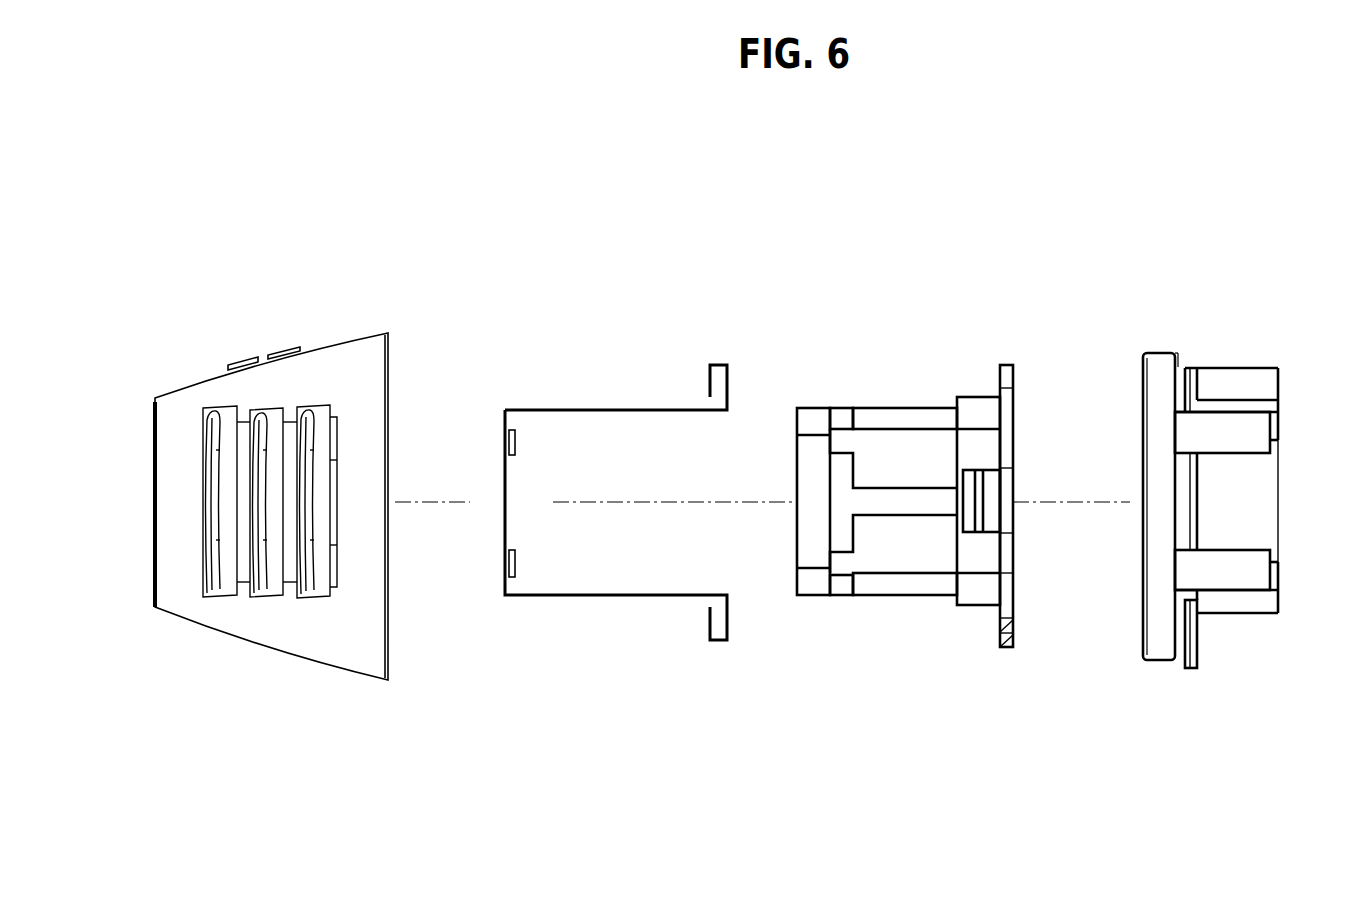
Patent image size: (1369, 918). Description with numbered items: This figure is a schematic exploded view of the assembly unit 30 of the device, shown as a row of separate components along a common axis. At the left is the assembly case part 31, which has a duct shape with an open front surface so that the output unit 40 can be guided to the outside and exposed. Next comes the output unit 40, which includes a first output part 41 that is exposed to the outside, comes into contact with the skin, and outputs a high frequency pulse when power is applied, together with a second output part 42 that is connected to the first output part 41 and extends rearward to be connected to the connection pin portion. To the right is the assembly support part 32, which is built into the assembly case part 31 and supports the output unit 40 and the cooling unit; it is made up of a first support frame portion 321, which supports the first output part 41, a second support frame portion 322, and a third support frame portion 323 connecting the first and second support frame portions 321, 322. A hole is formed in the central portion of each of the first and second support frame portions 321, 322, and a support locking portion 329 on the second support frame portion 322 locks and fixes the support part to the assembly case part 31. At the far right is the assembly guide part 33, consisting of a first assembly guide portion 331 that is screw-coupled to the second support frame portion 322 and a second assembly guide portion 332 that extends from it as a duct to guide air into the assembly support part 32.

The assembly unit 30 is at (735, 557).
The assembly case part 31 is at (358, 660).
The assembly support part 32 is at (905, 553).
The first support frame portion 321 is at (808, 597).
The second support frame portion 322 is at (983, 520).
The third support frame portion 323 is at (907, 597).
The support locking portion 329 is at (970, 475).
The assembly guide part 33 is at (1230, 588).
The first assembly guide portion 331 is at (1158, 648).
The second assembly guide portion 332 is at (1272, 518).
The output unit 40 is at (597, 430).
The first output part 41 is at (505, 447).
The second output part 42 is at (583, 408).